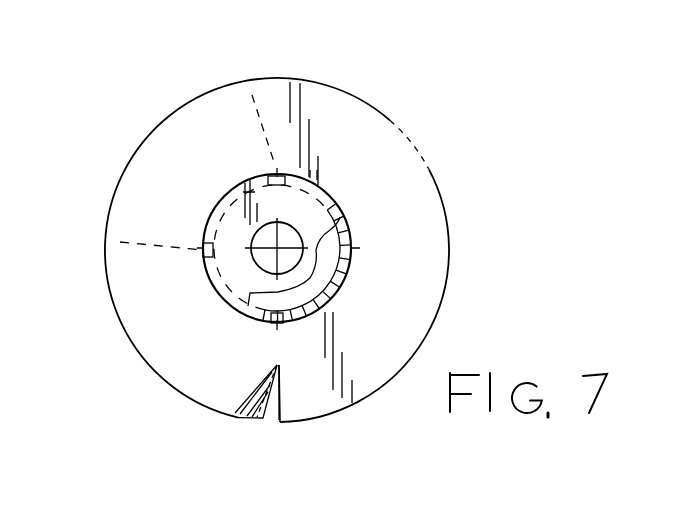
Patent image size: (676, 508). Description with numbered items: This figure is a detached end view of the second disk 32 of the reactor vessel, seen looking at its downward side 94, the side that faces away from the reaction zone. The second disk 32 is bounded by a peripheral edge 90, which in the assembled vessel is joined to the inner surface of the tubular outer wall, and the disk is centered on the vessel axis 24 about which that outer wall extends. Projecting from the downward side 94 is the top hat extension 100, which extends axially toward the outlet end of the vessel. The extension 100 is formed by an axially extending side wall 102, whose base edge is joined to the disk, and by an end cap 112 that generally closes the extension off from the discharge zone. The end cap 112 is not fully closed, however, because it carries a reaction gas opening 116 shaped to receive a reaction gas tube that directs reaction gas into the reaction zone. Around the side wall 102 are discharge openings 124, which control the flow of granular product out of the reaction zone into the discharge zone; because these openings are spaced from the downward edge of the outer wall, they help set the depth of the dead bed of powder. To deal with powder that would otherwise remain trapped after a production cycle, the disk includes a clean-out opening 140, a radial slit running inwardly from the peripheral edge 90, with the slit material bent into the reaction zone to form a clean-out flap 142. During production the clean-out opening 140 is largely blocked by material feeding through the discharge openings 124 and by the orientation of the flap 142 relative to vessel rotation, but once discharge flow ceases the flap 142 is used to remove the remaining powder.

The vessel axis 24 is at (277, 249).
The second disk 32 is at (389, 121).
The peripheral edge 90 is at (343, 402).
The downward side 94 is at (405, 174).
The top hat extension 100 is at (208, 295).
The side wall 102 is at (340, 295).
The end cap 112 is at (237, 230).
The reaction gas opening 116 is at (293, 226).
The discharge openings 124 is at (252, 80).
The clean-out opening 140 is at (272, 421).
The clean-out flap 142 is at (250, 413).